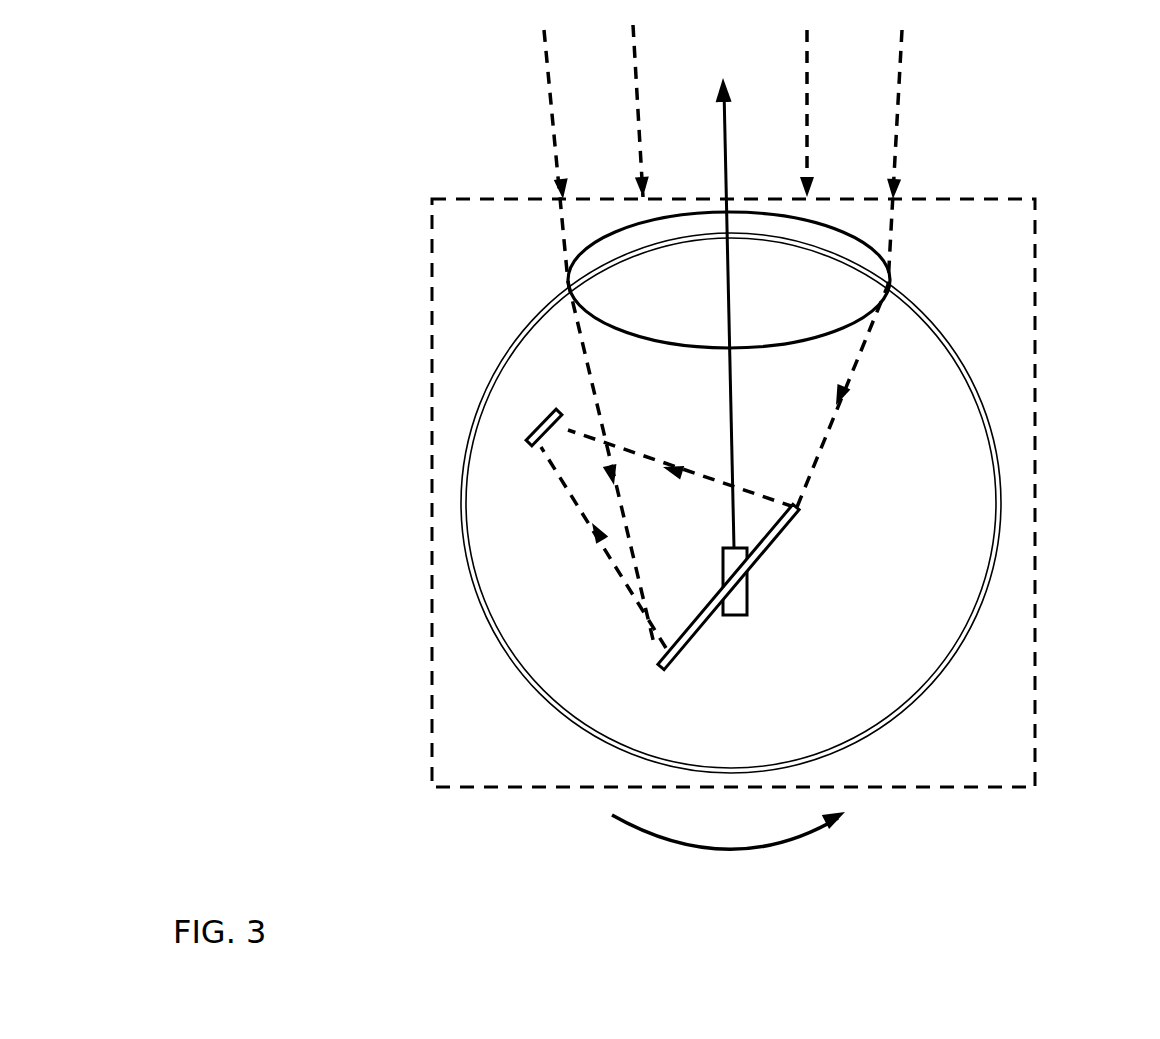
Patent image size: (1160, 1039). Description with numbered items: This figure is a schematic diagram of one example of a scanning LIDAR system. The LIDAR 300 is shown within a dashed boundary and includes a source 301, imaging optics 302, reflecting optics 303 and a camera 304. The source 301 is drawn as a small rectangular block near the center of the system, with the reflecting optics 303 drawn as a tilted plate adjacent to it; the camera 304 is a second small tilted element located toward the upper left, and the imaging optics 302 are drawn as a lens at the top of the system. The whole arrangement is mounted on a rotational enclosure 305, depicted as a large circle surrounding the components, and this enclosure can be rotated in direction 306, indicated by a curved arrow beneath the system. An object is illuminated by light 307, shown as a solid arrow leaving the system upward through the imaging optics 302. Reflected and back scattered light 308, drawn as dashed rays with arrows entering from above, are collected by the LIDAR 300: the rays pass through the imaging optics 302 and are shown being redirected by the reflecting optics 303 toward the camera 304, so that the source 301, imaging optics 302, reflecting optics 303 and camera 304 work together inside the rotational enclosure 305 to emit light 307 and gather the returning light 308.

The LIDAR 300 is at (1040, 683).
The source 301 is at (748, 600).
The imaging optics 302 is at (880, 243).
The reflecting optics 303 is at (800, 513).
The camera 304 is at (540, 423).
The rotational enclosure 305 is at (955, 357).
The direction 306 is at (803, 838).
The light 307 is at (725, 118).
The reflected and back scattered light 308 is at (548, 98).